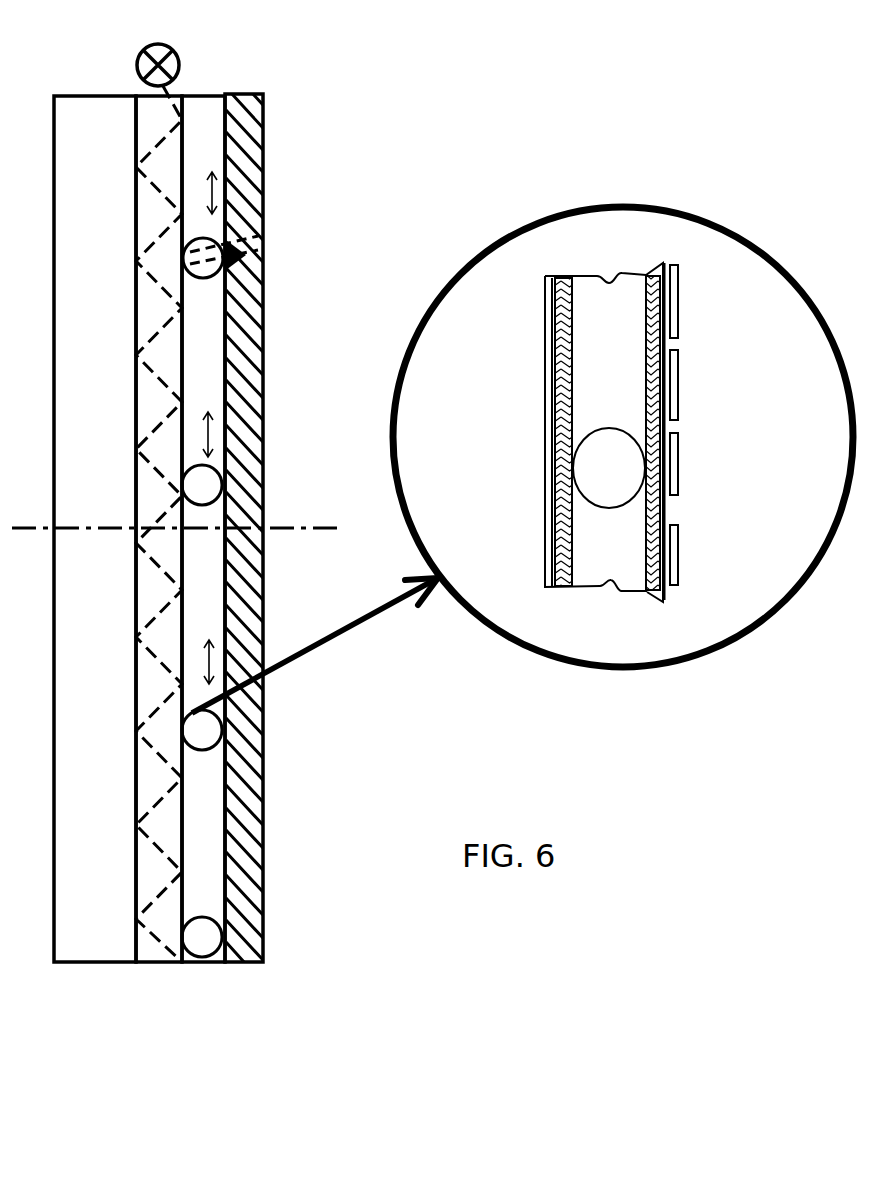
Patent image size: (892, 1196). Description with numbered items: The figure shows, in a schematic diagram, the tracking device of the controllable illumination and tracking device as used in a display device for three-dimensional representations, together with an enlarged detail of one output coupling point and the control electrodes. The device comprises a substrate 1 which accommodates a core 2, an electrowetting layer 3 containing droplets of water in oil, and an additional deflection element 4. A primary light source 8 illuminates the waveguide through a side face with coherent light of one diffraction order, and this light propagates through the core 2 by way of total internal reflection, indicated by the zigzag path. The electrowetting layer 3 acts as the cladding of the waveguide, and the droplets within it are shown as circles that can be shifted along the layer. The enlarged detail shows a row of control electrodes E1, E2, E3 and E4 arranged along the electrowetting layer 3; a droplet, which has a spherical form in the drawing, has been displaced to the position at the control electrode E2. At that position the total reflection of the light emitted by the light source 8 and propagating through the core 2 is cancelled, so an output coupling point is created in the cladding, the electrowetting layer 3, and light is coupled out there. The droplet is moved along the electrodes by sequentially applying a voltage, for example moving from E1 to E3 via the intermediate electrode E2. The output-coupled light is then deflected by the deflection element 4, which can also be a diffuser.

The substrate 1 is at (128, 954).
The core 2 is at (157, 954).
The electrowetting layer 3 is at (213, 955).
The deflection element 4 is at (252, 955).
The primary light source 8 is at (158, 50).
The control electrode E1 is at (693, 555).
The control electrode E2 is at (693, 464).
The control electrode E3 is at (693, 385).
The control electrode E4 is at (693, 301).